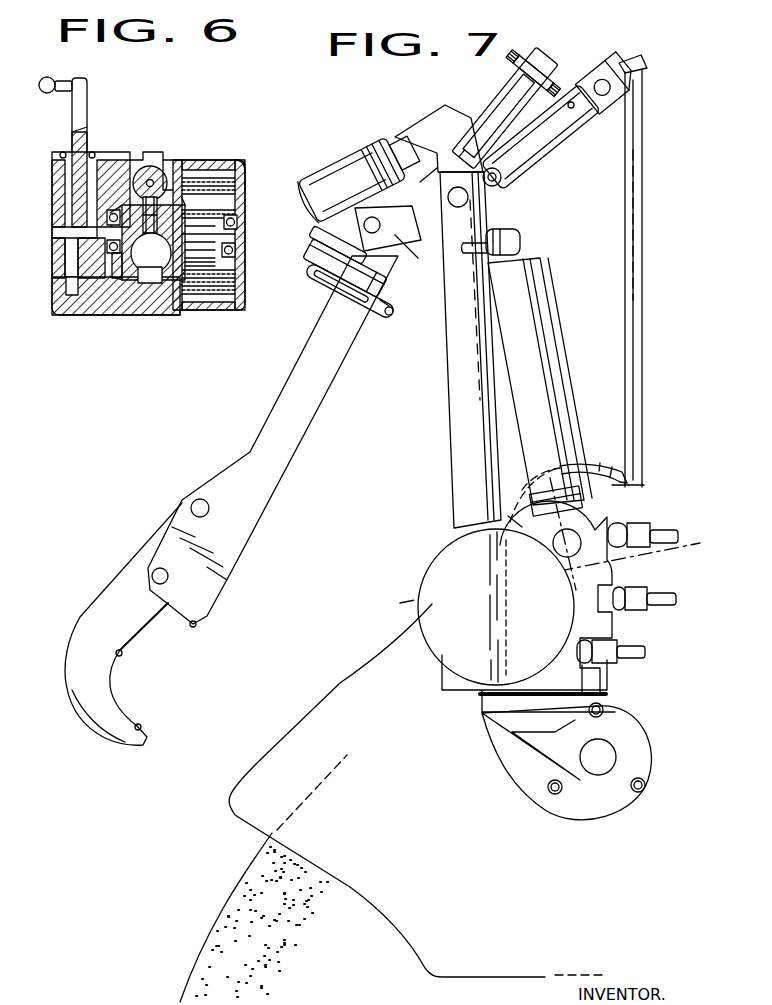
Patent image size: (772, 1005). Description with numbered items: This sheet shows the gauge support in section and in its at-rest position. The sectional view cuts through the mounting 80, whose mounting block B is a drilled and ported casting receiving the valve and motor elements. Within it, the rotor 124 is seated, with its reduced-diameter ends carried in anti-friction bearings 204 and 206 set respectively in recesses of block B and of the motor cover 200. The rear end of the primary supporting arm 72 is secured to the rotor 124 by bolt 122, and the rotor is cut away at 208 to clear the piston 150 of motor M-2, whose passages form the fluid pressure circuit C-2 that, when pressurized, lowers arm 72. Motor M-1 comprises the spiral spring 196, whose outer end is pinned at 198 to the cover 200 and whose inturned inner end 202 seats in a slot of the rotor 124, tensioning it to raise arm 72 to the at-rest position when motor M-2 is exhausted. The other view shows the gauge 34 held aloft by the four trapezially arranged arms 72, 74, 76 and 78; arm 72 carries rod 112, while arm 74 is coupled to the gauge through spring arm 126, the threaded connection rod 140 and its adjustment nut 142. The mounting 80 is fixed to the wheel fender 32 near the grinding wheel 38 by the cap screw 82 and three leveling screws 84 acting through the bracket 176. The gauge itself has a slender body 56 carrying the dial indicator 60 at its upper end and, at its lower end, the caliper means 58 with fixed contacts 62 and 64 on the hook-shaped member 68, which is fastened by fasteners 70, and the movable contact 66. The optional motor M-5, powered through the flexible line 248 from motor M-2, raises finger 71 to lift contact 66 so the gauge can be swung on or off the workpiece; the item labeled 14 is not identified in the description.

In FIG. 6, the mounting block B is at (52, 190).
In FIG. 6, the mounting 80 is at (50, 296).
In FIG. 7, the mounting 80 is at (476, 705).
In FIG. 6, the anti-friction bearing 204 is at (112, 210).
In FIG. 6, the piston 150 is at (147, 165).
In FIG. 6, the fluid pressure circuit C-2 is at (156, 178).
In FIG. 6, the pin 198 is at (208, 166).
In FIG. 6, the motor M-1 is at (237, 146).
In FIG. 6, the spiral spring 196 is at (240, 164).
In FIG. 6, the motor cover 200 is at (244, 176).
In FIG. 7, the motor cover 200 is at (428, 600).
In FIG. 6, the inturned inner end 202 is at (238, 196).
In FIG. 6, the anti-friction bearing 206 is at (237, 257).
In FIG. 7, the anti-friction bearing 206 is at (318, 279).
In FIG. 6, the rotor 124 is at (118, 280).
In FIG. 6, the arm 72 is at (132, 315).
In FIG. 7, the arm 72 is at (461, 410).
In FIG. 6, the bolt 122 is at (150, 283).
In FIG. 6, the cutaway 208 is at (191, 282).
In FIG. 7, the adjustment nut 142 is at (546, 62).
In FIG. 7, the threaded connection rod 140 is at (552, 88).
In FIG. 7, the spring arm 126 is at (480, 108).
In FIG. 7, the dial indicator 60 is at (346, 172).
In FIG. 7, the arm 74 is at (545, 140).
In FIG. 7, the rod 112 is at (463, 197).
In FIG. 7, the finger 71 is at (330, 241).
In FIG. 7, the motor M-5 is at (314, 268).
In FIG. 7, the flexible fluid pressure line 248 is at (386, 314).
In FIG. 7, the arm 76 is at (640, 302).
In FIG. 7, the gauge 34 is at (278, 424).
In FIG. 7, the motor M-2 is at (552, 391).
In FIG. 7, the arm 78 is at (587, 465).
In FIG. 7, the fasteners 70 is at (191, 506).
In FIG. 7, the body 56 is at (272, 466).
In FIG. 7, the axis / shaft 14 is at (560, 508).
In FIG. 7, the caliper means 58 is at (111, 607).
In FIG. 7, the wheel fender or cover 32 is at (317, 720).
In FIG. 7, the movable contact 66 is at (196, 627).
In FIG. 7, the fixed contact 64 is at (122, 656).
In FIG. 7, the hook-shaped member 68 is at (95, 706).
In FIG. 7, the fixed contact 62 is at (141, 726).
In FIG. 7, the leveling screws 84 is at (605, 712).
In FIG. 7, the cap screw or bolt 82 is at (602, 758).
In FIG. 7, the bracket 176 is at (535, 767).
In FIG. 7, the wheel 38 is at (250, 897).